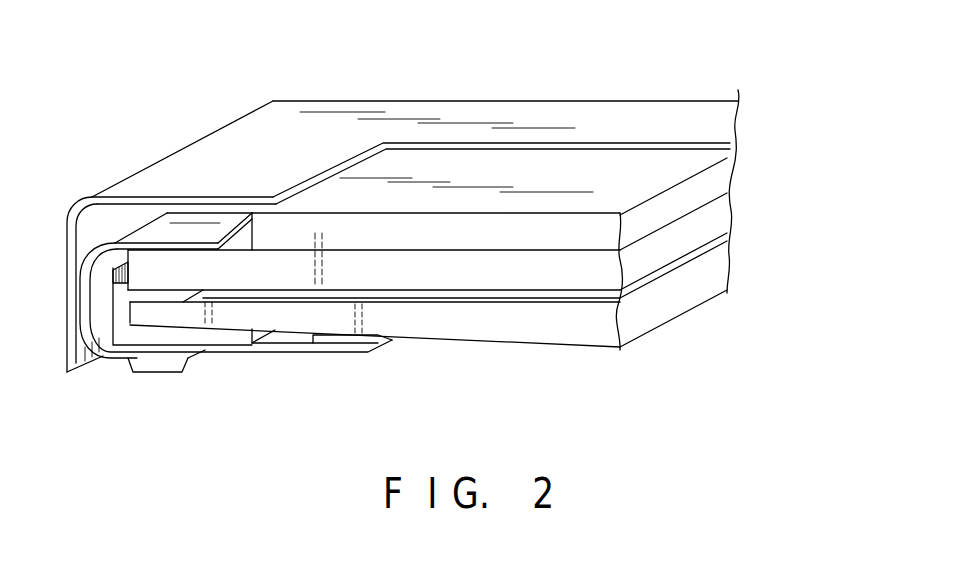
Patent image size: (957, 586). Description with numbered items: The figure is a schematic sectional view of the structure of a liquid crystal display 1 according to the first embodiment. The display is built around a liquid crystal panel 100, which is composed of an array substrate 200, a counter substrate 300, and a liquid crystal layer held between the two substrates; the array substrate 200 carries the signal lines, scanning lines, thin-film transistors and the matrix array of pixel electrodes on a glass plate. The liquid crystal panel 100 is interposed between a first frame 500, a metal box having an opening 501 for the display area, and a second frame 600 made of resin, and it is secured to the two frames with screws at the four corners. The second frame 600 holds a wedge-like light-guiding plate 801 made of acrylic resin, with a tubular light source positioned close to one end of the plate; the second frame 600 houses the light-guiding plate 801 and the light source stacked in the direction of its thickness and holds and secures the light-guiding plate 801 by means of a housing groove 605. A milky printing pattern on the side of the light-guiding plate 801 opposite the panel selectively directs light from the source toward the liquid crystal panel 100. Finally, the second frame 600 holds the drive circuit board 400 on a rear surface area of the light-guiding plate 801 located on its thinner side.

The liquid crystal display 1 is at (794, 161).
The liquid crystal panel 100 is at (490, 251).
The array substrate 200 is at (459, 237).
The counter substrate 300 is at (529, 251).
The drive circuit board 400 is at (322, 371).
The first frame 500 is at (402, 203).
The opening 501 is at (501, 135).
The second frame 600 is at (236, 313).
The housing groove 605 is at (158, 366).
The light-guiding plate 801 is at (428, 327).